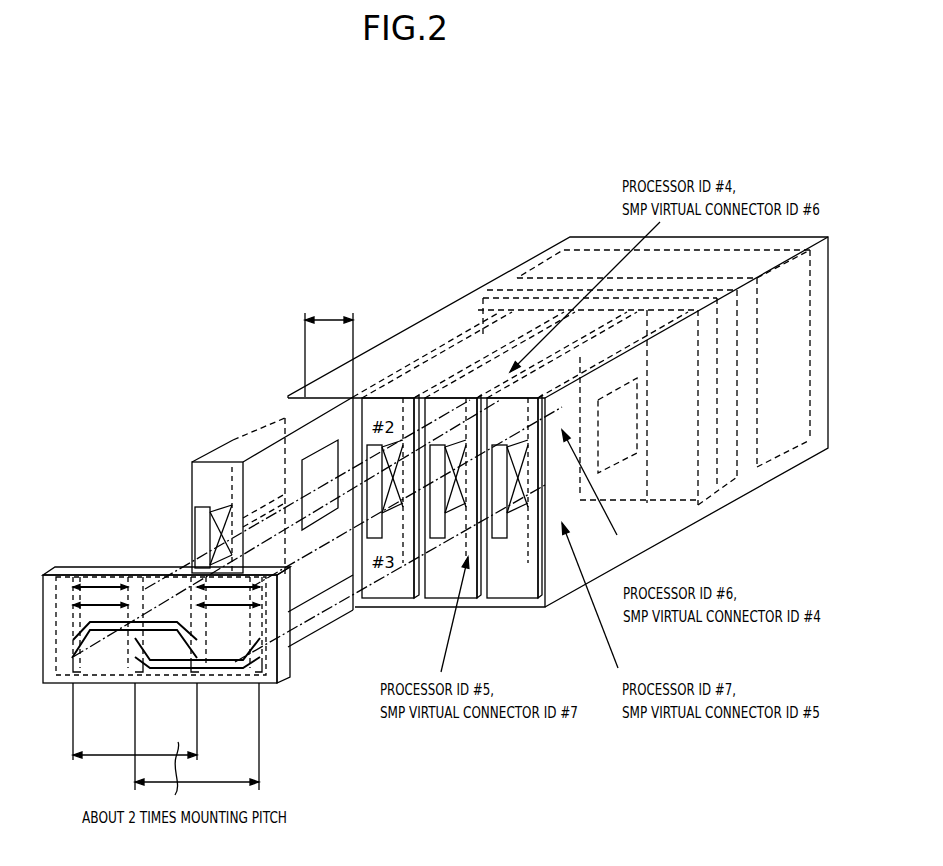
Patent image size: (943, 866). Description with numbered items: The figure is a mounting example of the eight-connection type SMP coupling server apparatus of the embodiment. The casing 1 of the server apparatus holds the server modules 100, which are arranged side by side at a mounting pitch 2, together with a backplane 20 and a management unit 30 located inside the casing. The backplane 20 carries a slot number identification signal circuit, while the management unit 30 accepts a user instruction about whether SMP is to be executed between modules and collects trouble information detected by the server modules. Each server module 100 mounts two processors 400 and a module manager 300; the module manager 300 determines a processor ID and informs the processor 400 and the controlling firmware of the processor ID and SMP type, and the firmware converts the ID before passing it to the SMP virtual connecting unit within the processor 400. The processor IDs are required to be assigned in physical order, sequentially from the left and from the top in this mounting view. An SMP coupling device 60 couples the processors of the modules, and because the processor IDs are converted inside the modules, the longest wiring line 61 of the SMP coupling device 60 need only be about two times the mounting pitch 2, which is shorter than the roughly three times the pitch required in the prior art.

The casing 1 is at (437, 312).
The mounting pitch 2 is at (330, 317).
The backplane 20 is at (487, 287).
The management unit 30 is at (552, 252).
The server module 100 is at (257, 423).
The module manager 300 is at (310, 453).
The processor 400 is at (230, 447).
The SMP coupling device 60 is at (118, 683).
The longest wiring line 61 is at (173, 610).